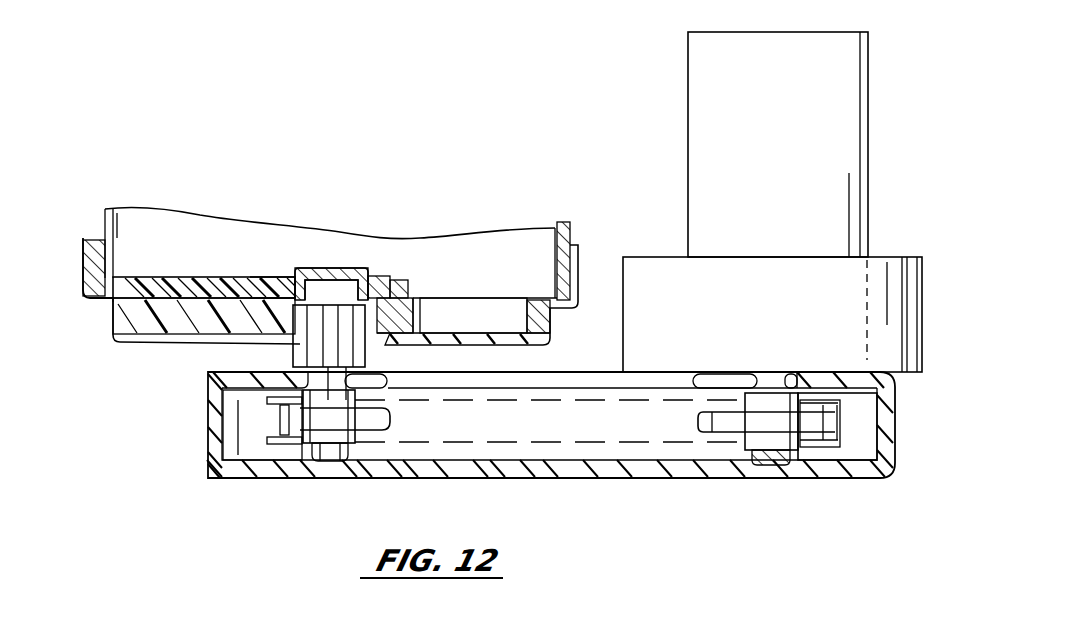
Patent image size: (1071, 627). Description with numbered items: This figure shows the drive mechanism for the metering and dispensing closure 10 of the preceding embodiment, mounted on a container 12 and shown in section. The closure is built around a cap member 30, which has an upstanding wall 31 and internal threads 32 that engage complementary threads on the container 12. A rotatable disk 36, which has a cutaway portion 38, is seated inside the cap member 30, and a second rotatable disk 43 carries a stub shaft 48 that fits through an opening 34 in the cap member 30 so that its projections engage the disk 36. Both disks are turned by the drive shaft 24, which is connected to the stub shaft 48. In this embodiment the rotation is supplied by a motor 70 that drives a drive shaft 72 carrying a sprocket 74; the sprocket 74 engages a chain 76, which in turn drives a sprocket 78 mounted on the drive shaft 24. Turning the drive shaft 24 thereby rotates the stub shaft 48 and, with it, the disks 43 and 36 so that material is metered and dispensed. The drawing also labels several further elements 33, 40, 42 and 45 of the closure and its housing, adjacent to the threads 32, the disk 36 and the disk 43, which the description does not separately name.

The metering and dispensing closure 10 is at (65, 318).
The container 12 is at (568, 233).
The drive shaft 24 is at (350, 350).
The cap member 30 is at (43, 263).
The upstanding wall 31 is at (90, 242).
The internal threads 32 is at (572, 246).
The lower bracket 33 is at (500, 346).
The opening 34 is at (270, 282).
The rotatable disk 36 is at (178, 279).
The cutaway portion 38 is at (400, 290).
The cap 40 is at (322, 278).
The flange 42 is at (392, 278).
The rotatable disk 43 is at (88, 348).
The lip 45 is at (95, 383).
The stub shaft 48 is at (332, 283).
The motor 70 is at (772, 314).
The drive shaft 72 is at (768, 440).
The sprocket 74 is at (708, 425).
The chain 76 is at (832, 443).
The sprocket 78 is at (380, 422).